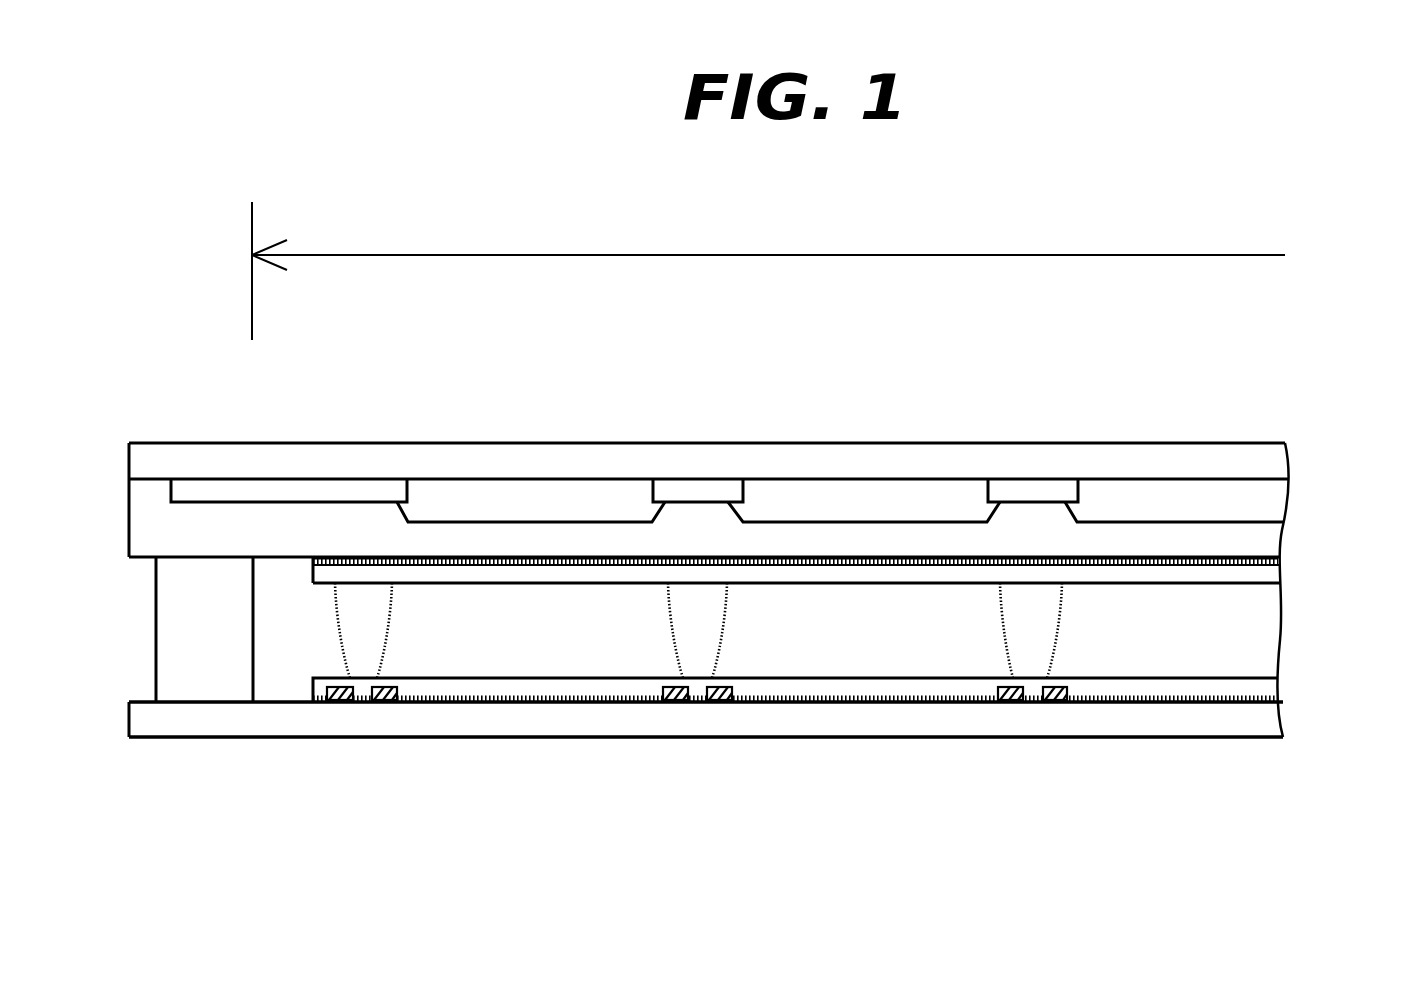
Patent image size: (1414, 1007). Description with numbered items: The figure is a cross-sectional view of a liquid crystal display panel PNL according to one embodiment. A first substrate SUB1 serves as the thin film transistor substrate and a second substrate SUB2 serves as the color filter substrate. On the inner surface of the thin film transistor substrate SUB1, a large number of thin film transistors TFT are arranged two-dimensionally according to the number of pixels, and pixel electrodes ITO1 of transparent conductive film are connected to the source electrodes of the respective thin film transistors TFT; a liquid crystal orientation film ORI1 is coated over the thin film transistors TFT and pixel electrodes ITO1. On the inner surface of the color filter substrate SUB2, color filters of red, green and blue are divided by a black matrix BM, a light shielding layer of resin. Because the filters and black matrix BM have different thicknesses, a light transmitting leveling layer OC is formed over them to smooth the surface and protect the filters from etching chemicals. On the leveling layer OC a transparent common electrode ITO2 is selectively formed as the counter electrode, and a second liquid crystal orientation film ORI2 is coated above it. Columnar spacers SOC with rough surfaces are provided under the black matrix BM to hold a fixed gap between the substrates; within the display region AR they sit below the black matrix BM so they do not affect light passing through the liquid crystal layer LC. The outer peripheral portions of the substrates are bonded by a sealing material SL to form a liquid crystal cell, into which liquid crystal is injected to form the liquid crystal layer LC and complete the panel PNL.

The liquid crystal display panel PNL is at (160, 443).
The display region AR is at (768, 271).
The second substrate SUB2 is at (1258, 460).
The leveling layer OC is at (152, 528).
The black matrix BM is at (287, 487).
The second liquid crystal orientation film ORI2 is at (1267, 575).
The common electrode ITO2 is at (815, 575).
The columnar spacer SOC is at (370, 605).
The liquid crystal layer LC is at (810, 660).
The liquid crystal orientation film ORI1 is at (1263, 688).
The pixel electrode ITO1 is at (448, 700).
The thin film transistor TFT is at (360, 703).
The sealing material SL is at (177, 630).
The first substrate SUB1 is at (1175, 728).